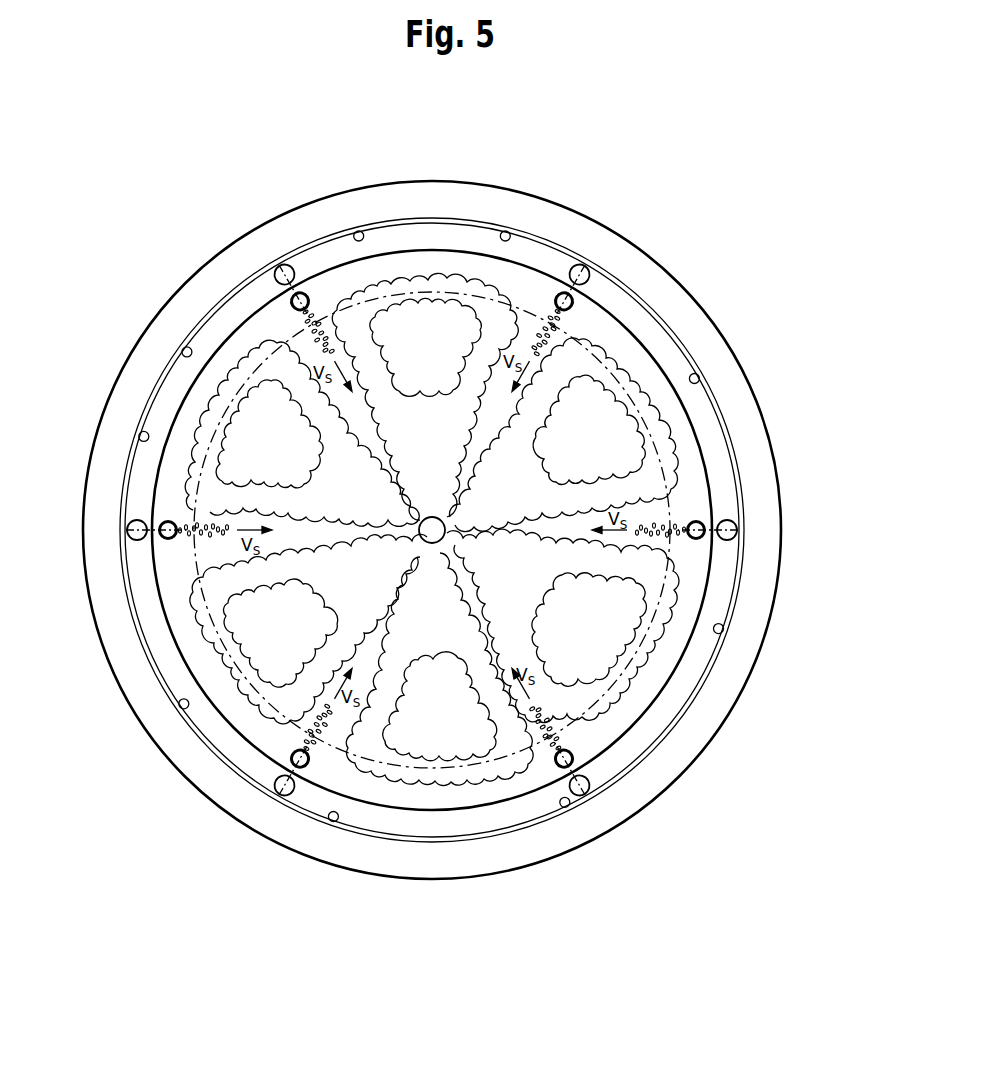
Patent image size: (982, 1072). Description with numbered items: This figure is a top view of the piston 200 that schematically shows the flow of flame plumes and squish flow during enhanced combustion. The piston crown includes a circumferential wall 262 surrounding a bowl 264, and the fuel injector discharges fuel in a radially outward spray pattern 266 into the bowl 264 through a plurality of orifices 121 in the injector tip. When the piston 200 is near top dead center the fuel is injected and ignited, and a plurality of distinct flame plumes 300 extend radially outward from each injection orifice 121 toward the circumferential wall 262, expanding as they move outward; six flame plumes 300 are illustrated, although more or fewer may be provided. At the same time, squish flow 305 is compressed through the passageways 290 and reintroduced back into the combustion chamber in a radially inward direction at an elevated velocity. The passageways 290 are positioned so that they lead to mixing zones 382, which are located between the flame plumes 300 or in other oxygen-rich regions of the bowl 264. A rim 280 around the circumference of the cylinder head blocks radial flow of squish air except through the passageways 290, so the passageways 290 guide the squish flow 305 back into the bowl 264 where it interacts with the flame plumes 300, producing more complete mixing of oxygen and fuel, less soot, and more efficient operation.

The piston 200 is at (702, 233).
The bowl 264 is at (211, 271).
The circumferential wall 262 is at (718, 451).
The radially outward spray pattern 266 is at (627, 459).
The flame plumes 300 is at (138, 382).
The rim 280 is at (186, 345).
The passageways 290 is at (127, 538).
The squish flow 305 is at (305, 325).
The mixing zones 382 is at (290, 522).
The orifices 121 is at (428, 517).